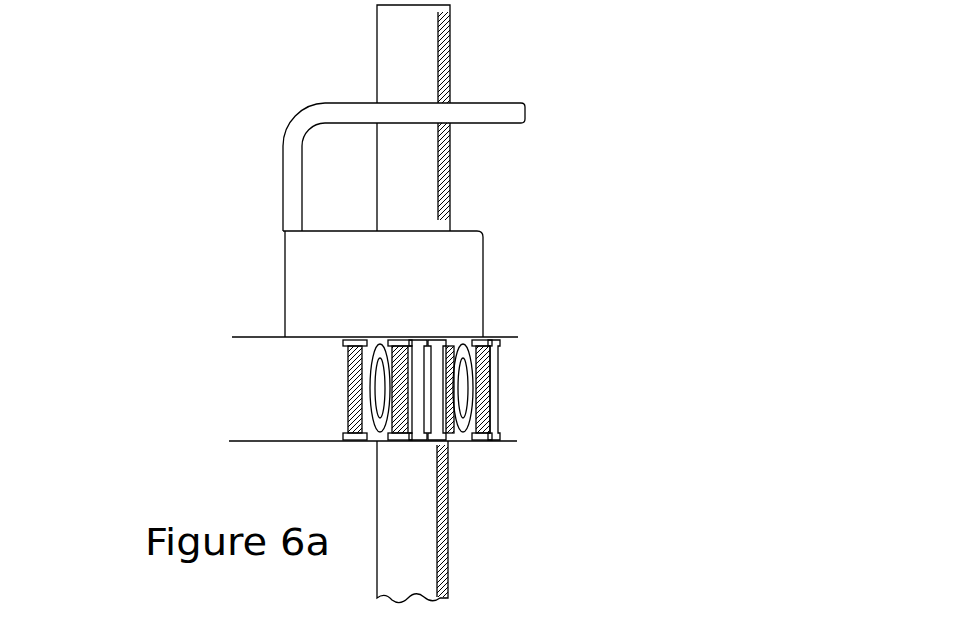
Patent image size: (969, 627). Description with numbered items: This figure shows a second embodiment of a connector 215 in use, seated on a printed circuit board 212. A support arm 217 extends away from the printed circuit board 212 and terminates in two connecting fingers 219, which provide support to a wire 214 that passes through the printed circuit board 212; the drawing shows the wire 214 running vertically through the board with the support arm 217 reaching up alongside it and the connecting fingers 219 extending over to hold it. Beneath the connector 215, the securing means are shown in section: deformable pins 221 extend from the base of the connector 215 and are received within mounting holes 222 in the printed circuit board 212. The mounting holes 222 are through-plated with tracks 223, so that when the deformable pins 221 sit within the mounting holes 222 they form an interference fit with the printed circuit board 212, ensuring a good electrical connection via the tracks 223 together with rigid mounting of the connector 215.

The printed circuit board 212 is at (274, 380).
The wire 214 is at (414, 57).
The connector 215 is at (209, 125).
The support arm 217 is at (280, 170).
The connecting fingers 219 is at (531, 114).
The deformable pins 221 is at (402, 437).
The mounting holes 222 is at (400, 345).
The tracks 223 is at (414, 383).